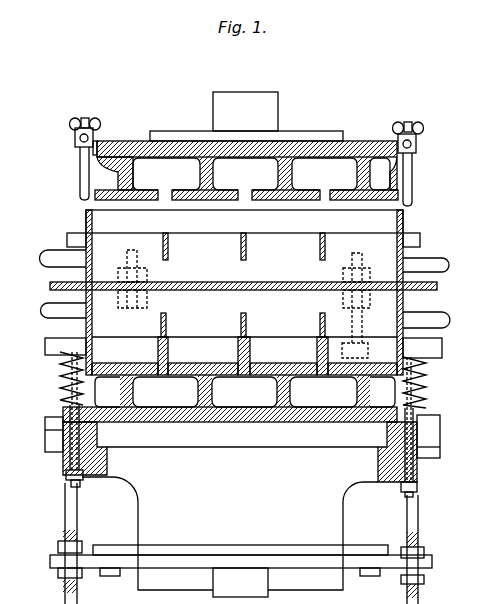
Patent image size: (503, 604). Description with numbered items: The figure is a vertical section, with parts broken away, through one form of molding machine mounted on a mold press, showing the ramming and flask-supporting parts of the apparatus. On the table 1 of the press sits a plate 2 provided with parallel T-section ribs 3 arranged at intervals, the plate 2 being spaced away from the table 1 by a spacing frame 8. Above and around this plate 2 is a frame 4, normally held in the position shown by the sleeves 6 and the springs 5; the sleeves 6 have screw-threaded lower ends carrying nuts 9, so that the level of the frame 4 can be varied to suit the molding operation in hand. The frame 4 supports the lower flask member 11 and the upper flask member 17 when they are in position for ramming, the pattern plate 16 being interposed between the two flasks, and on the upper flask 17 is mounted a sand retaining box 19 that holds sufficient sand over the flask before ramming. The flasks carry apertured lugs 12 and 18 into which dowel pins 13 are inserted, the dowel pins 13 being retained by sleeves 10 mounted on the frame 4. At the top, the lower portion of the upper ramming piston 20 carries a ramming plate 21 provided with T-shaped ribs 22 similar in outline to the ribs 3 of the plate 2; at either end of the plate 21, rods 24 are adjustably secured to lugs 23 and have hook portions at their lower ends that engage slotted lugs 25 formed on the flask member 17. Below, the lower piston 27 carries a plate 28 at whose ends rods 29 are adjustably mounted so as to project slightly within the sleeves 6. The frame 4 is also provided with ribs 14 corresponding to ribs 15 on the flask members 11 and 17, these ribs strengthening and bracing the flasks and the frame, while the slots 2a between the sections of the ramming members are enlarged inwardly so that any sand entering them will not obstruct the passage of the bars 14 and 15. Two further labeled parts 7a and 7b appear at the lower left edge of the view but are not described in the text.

The table 1 is at (107, 464).
The plate 2 is at (247, 415).
The slots 2a is at (164, 199).
The T-section ribs 3 is at (204, 393).
The frame 4 is at (93, 352).
The springs 5 is at (62, 374).
The sleeves 6 is at (60, 393).
The part 7a is at (12, 572).
The part 7b is at (51, 598).
The spacing frame 8 is at (54, 428).
The nuts 9 is at (58, 449).
The sleeves 10 is at (362, 328).
The flask member 11 is at (92, 318).
The apertured lugs 12 is at (146, 300).
The dowel pins 13 is at (134, 262).
The ribs 14 is at (170, 356).
The ribs 15 is at (166, 324).
The pattern plate 16 is at (210, 291).
The flask member 17 is at (85, 262).
The apertured lugs 18 is at (148, 275).
The sand retaining box 19 is at (88, 218).
The upper ramming piston 20 is at (298, 136).
The ramming plate 21 is at (325, 150).
The T-shaped ribs 22 is at (137, 176).
The lugs 23 is at (75, 135).
The rods 24 is at (80, 172).
The slotted lugs 25 is at (78, 238).
The lower piston 27 is at (245, 344).
The plate 28 is at (214, 548).
The rods 29 is at (72, 521).